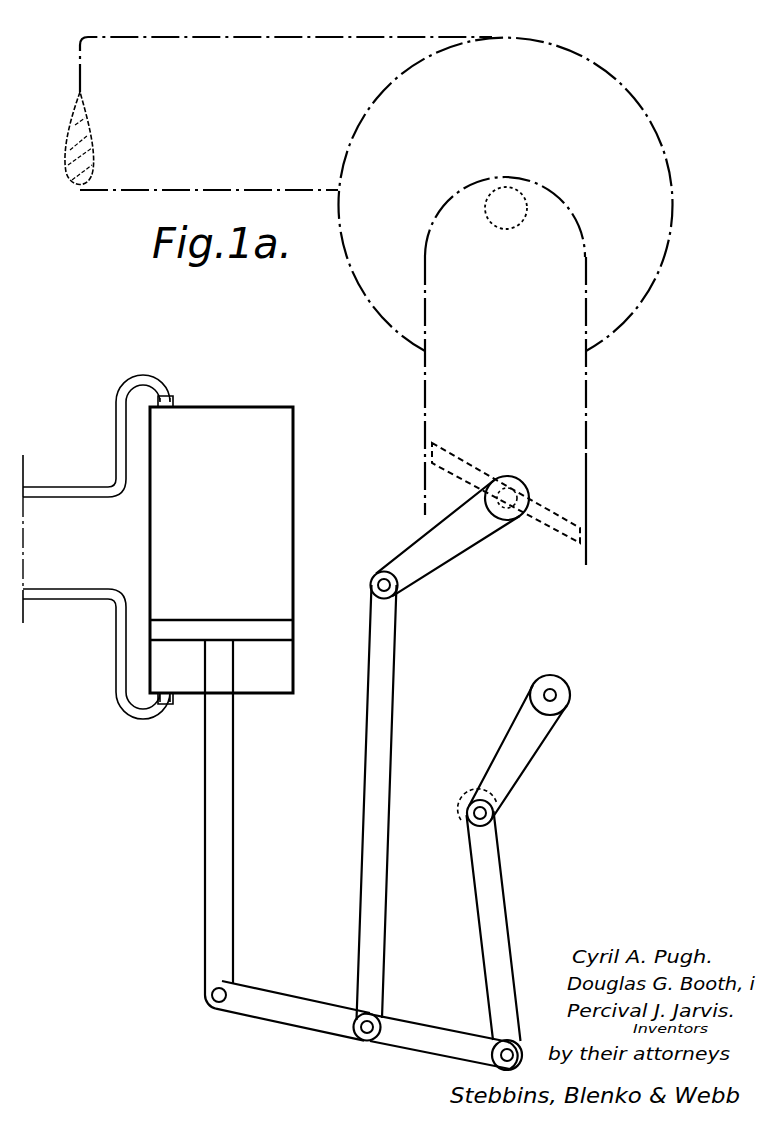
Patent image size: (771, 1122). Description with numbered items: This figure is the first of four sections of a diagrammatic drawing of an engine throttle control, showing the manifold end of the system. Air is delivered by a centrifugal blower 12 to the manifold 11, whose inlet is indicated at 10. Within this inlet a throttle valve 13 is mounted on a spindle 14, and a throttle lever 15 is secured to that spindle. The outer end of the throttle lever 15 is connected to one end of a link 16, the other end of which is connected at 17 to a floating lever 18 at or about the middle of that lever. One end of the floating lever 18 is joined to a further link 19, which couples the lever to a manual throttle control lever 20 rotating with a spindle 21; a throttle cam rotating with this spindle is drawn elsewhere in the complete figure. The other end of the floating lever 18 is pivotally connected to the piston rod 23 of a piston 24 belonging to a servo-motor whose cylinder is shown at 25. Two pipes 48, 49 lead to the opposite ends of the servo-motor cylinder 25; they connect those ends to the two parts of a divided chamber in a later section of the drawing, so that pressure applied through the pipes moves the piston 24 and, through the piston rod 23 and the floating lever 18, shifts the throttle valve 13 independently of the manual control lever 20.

The inlet to the engine manifold 10 is at (587, 458).
The manifold 11 is at (157, 190).
The centrifugal blower 12 is at (578, 53).
The throttle valve 13 is at (543, 527).
The spindle 14 is at (510, 492).
The throttle lever 15 is at (411, 548).
The link 16 is at (397, 628).
The connection point 17 is at (353, 1016).
The floating lever 18 is at (448, 1028).
The further link 19 is at (507, 902).
The manual throttle control lever 20 is at (536, 753).
The spindle 21 is at (546, 690).
The piston rod 23 is at (212, 834).
The piston 24 is at (187, 620).
The servo-motor cylinder 25 is at (185, 675).
The pipe 48 is at (75, 487).
The pipe 49 is at (75, 583).